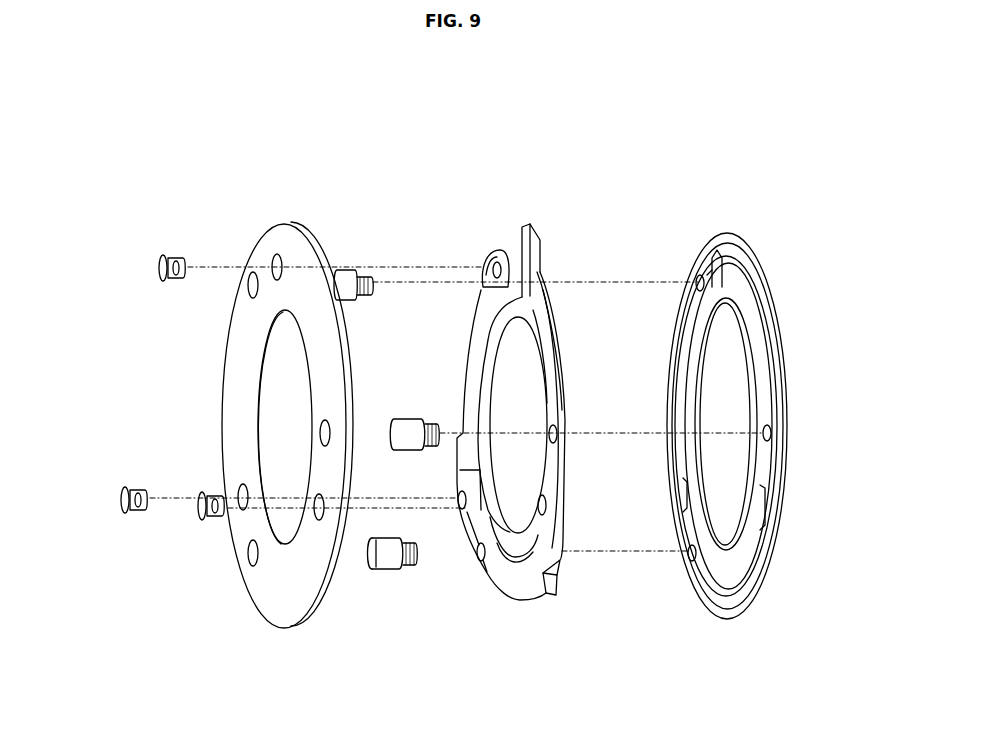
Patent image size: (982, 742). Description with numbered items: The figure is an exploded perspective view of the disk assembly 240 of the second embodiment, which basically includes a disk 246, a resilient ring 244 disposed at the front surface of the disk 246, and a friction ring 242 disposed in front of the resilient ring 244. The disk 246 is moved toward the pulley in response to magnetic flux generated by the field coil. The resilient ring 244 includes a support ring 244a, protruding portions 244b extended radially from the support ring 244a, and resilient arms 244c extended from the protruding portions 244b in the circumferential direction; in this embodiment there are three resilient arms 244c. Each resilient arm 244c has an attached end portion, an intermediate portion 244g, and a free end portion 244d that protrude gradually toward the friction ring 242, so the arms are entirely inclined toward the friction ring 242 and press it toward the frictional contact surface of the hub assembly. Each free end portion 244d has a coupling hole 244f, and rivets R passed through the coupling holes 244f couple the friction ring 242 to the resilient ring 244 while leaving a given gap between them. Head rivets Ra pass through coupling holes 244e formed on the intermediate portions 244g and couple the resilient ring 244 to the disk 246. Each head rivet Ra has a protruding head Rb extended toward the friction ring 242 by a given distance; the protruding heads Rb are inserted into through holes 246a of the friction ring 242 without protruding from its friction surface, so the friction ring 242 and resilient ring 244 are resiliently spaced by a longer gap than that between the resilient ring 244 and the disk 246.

The disk assembly 240 is at (807, 120).
The friction ring 242 is at (291, 222).
The resilient ring 244 is at (557, 257).
The support ring 244a is at (502, 575).
The protruding portions 244b is at (558, 542).
The resilient arms 244c is at (567, 320).
The free end portion 244d is at (488, 268).
The coupling holes 244e is at (557, 432).
The coupling hole 244f is at (503, 250).
The intermediate portion 244g is at (549, 380).
The disk 246 is at (786, 310).
The through holes 246a is at (324, 432).
The rivets R is at (118, 514).
The head rivets Ra is at (383, 607).
The protruding head Rb is at (367, 563).